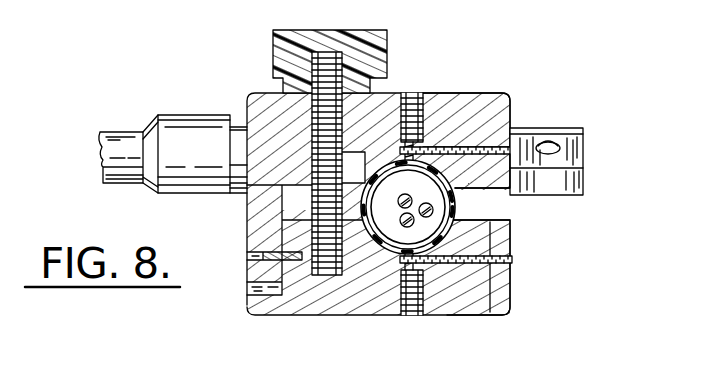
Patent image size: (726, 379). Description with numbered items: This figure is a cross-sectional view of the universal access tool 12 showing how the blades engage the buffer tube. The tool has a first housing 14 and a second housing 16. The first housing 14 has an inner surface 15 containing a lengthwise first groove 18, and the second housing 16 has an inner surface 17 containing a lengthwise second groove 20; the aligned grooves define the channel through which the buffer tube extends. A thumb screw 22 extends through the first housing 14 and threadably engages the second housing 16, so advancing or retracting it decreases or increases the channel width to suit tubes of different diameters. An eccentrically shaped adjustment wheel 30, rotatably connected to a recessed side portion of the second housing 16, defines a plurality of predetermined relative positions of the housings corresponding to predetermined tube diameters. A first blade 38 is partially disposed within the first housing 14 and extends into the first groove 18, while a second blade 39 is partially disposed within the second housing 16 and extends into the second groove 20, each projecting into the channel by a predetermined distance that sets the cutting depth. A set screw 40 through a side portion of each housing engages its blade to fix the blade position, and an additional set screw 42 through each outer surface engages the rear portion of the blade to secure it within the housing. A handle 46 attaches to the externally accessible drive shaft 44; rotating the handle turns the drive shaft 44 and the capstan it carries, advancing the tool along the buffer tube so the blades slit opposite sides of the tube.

The universal access tool 12 is at (490, 82).
The first housing 14 is at (497, 101).
The inner surface 15 is at (420, 163).
The second housing 16 is at (503, 303).
The inner surface 17 is at (492, 213).
The first groove 18 is at (508, 174).
The second groove 20 is at (363, 240).
The thumb screw 22 is at (380, 36).
The adjustment wheel 30 is at (262, 221).
The first blade 38 is at (340, 152).
The second blade 39 is at (406, 252).
The set screw 40 is at (500, 147).
The additional set screw 42 is at (410, 98).
The drive shaft 44 is at (575, 163).
The handle 46 is at (123, 140).